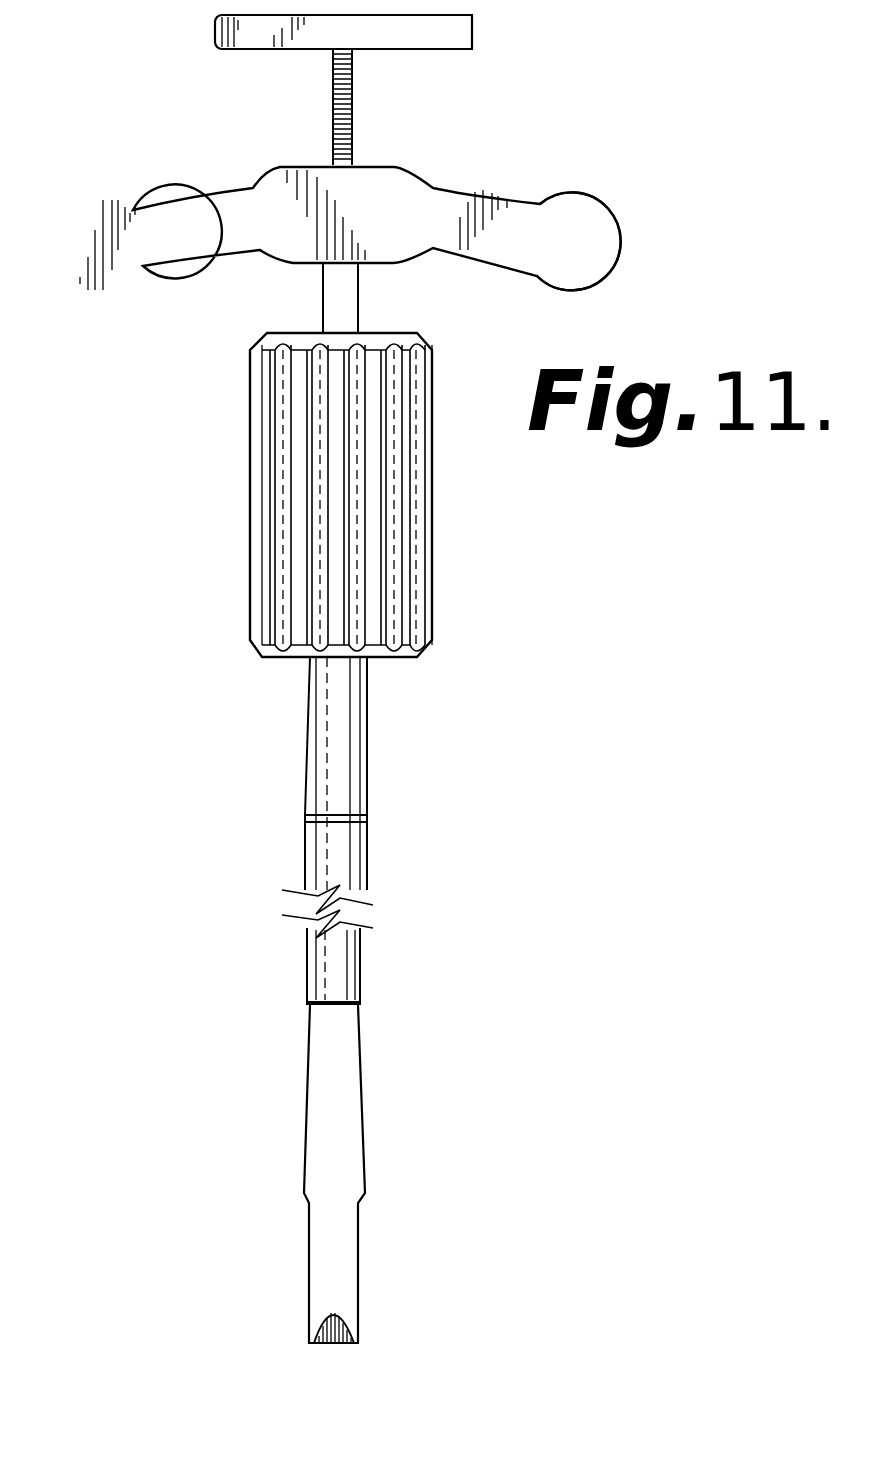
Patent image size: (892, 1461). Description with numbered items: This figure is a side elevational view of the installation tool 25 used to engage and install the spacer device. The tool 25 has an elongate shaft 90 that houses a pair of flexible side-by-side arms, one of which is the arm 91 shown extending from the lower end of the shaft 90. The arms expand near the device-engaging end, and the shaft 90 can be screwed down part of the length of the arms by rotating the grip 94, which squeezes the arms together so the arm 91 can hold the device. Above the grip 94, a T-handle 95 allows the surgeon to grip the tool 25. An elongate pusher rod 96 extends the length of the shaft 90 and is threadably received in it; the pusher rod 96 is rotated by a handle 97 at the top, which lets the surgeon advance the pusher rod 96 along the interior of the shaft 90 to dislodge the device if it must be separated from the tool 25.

The handle 97 is at (448, 15).
The pusher rod 96 is at (352, 86).
The installation tool 25 is at (470, 192).
The T-handle 95 is at (623, 240).
The grip 94 is at (432, 597).
The shaft 90 is at (367, 985).
The arm 91 is at (358, 1305).